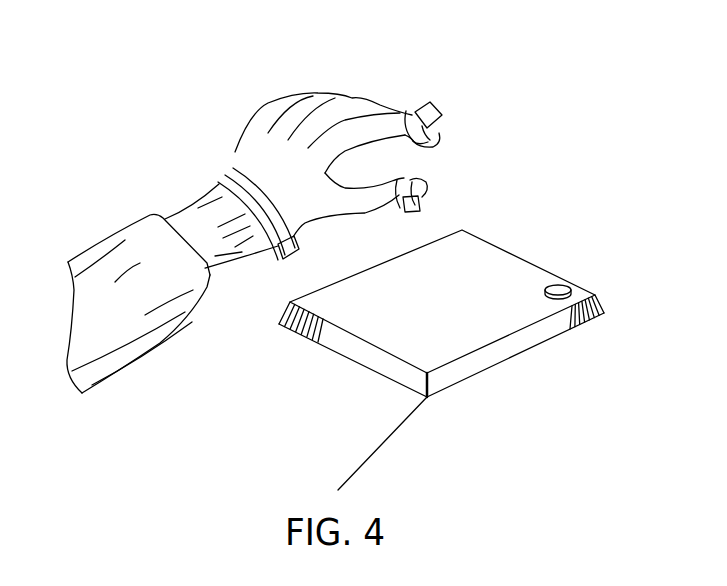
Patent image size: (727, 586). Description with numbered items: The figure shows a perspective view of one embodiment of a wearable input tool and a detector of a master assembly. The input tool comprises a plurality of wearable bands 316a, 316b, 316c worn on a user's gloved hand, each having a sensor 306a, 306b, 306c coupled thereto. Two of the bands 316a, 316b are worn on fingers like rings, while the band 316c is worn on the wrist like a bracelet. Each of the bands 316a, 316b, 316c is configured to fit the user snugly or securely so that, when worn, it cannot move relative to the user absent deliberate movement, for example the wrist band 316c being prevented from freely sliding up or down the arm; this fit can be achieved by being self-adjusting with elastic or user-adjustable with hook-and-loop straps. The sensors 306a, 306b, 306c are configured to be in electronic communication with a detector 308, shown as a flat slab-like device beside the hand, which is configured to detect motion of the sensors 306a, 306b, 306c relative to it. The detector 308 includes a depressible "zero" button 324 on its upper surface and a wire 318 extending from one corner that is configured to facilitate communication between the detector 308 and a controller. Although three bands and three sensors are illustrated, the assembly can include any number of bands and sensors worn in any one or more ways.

The sensor 306a is at (445, 98).
The sensor 306b is at (440, 191).
The sensor 306c is at (273, 260).
The wearable band 316a is at (406, 112).
The wearable band 316b is at (401, 199).
The wrist band 316c is at (232, 172).
The detector 308 is at (512, 352).
The wire 318 is at (384, 442).
The depressible "zero" button 324 is at (558, 284).